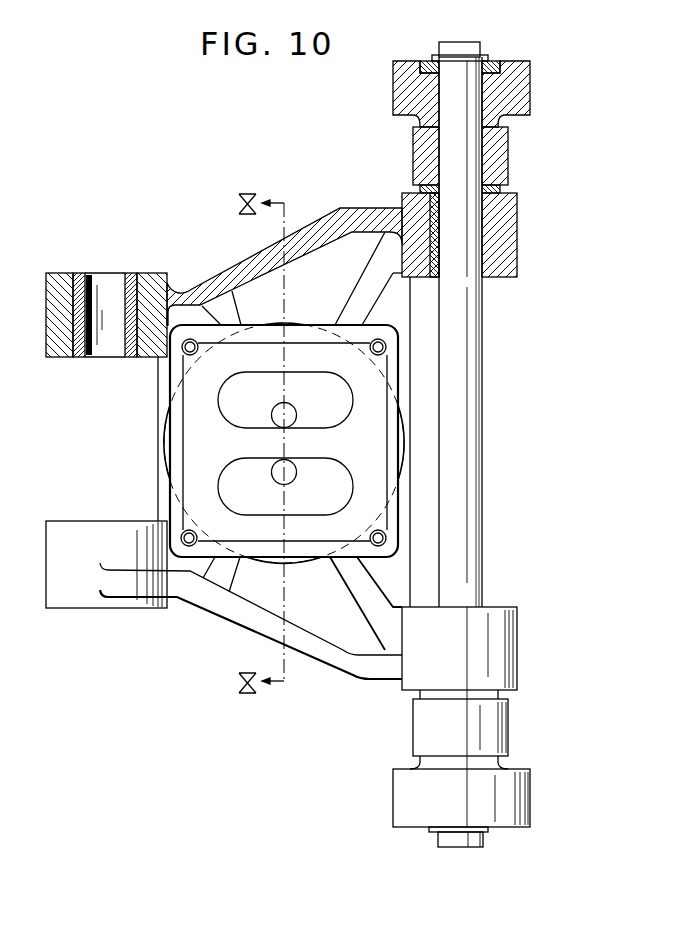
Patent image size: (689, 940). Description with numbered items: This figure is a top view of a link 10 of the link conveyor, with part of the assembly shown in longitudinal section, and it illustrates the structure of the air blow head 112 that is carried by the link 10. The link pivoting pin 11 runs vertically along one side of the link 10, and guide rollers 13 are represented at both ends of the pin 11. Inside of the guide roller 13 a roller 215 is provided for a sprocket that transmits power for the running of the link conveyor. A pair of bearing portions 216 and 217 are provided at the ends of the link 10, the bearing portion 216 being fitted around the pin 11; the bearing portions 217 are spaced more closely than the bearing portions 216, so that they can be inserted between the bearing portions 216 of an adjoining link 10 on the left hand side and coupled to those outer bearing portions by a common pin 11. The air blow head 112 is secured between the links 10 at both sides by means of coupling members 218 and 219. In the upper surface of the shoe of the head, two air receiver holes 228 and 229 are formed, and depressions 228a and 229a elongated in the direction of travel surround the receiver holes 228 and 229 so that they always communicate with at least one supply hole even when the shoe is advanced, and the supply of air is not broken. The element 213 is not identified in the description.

The link 10 is at (222, 279).
The link pivoting pin 11 is at (484, 375).
The guide roller 13 is at (503, 70).
The air blow head 112 is at (150, 448).
The lower end block 213 is at (530, 795).
The roller 215 is at (505, 150).
The bearing portion 216 is at (510, 245).
The bearing portion 217 is at (60, 357).
The coupling member 218 is at (234, 302).
The coupling member 219 is at (356, 298).
The air receiver hole 228 is at (293, 477).
The elongated depression 228a is at (234, 465).
The air receiver hole 229 is at (291, 410).
The elongated depression 229a is at (246, 376).